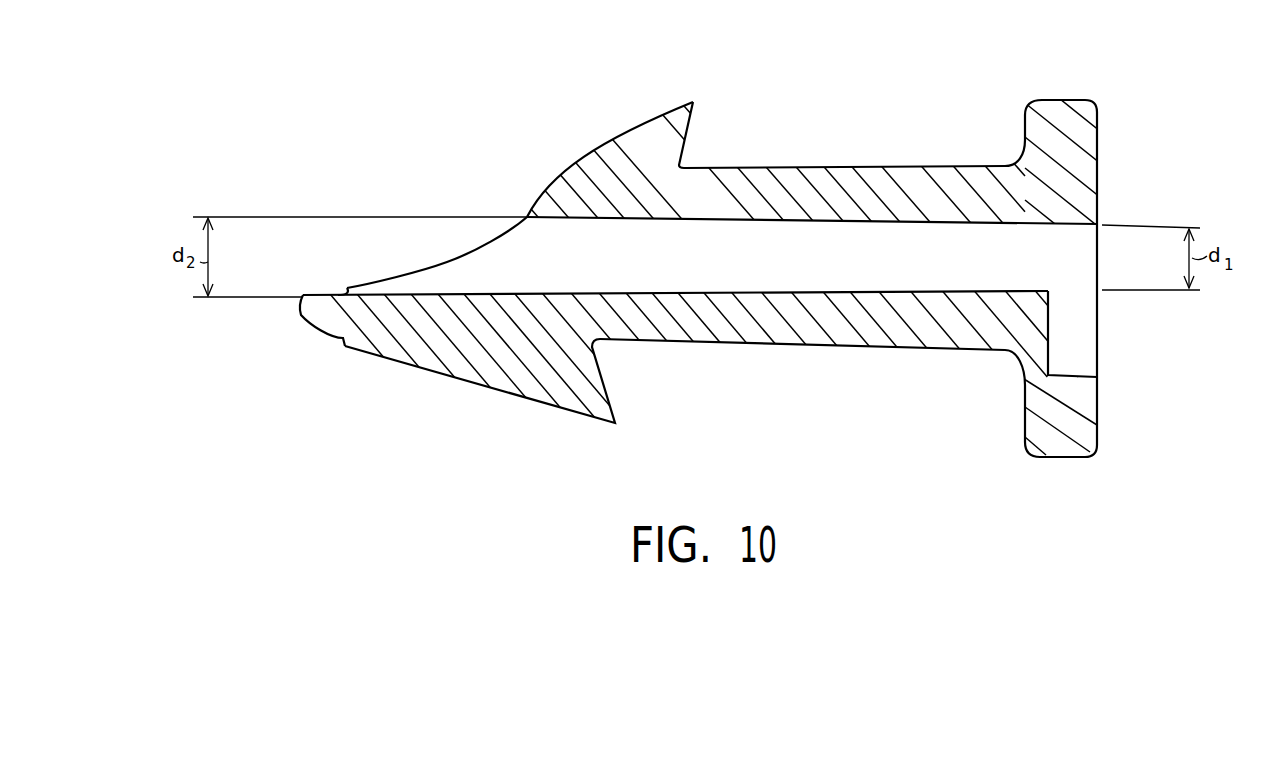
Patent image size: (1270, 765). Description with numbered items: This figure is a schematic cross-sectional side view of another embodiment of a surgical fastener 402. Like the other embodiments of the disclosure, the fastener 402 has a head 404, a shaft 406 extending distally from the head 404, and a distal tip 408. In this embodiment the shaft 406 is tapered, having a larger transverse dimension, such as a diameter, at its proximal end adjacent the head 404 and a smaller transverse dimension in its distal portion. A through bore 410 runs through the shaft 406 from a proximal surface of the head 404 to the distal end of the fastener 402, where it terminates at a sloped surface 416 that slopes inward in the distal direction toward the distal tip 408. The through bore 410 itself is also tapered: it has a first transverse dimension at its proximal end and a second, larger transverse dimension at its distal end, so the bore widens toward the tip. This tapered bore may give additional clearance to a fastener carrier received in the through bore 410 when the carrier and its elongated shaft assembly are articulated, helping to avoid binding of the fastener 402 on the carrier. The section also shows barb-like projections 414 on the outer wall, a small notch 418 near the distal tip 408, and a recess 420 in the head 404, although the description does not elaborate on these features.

The fastener 402 is at (520, 188).
The head 404 is at (1098, 130).
The shaft 406 is at (884, 165).
The distal tip 408 is at (304, 318).
The through bore 410 is at (772, 240).
The barbs 414 is at (682, 106).
The sloped surface 416 is at (578, 162).
The notch 418 is at (345, 288).
The recess 420 is at (1083, 345).